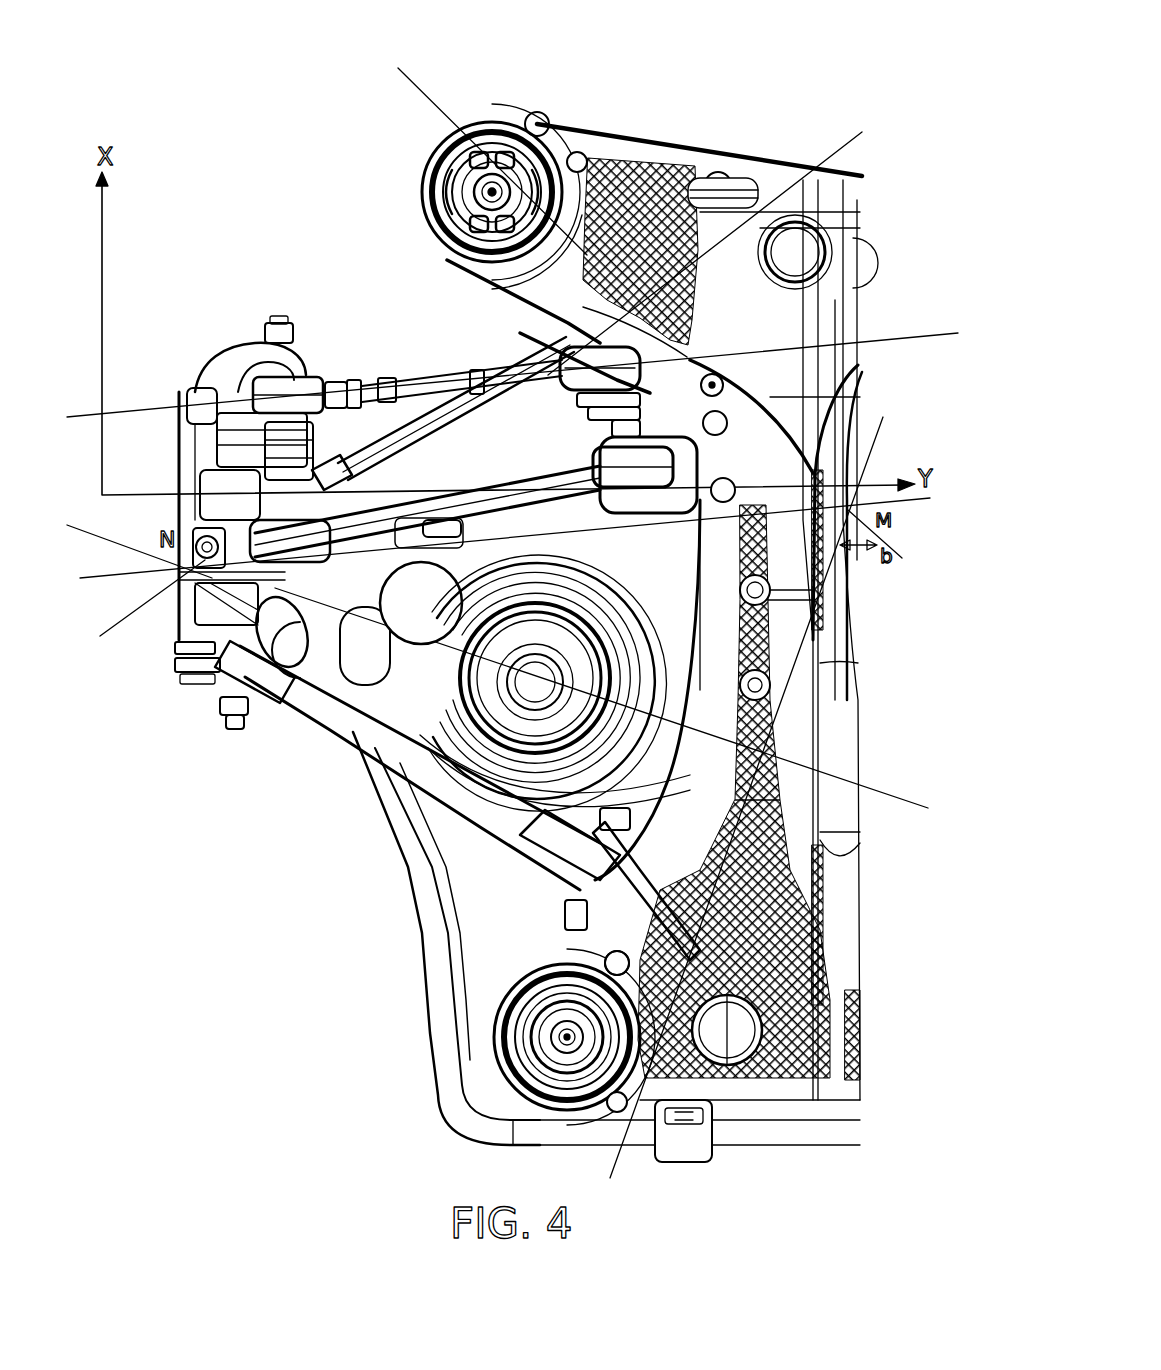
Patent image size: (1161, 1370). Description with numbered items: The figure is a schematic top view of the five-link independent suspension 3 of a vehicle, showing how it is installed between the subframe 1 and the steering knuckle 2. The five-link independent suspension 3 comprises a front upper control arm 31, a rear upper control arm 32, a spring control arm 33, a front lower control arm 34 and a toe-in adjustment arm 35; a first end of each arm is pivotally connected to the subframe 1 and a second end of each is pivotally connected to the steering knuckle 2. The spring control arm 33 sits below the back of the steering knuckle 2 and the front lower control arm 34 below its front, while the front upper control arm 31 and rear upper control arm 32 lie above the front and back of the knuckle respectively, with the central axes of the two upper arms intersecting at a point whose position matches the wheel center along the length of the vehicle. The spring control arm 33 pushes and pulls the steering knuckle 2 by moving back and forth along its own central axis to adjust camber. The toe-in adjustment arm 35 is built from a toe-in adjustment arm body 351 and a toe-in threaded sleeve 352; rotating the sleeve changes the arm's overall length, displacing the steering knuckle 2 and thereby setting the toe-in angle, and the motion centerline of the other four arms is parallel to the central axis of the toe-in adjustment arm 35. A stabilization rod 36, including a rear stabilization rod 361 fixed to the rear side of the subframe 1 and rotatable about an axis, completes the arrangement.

The subframe 1 is at (658, 160).
The steering knuckle 2 is at (238, 358).
The five-link independent suspension 3 is at (500, 487).
The front upper control arm 31 is at (445, 492).
The rear upper control arm 32 is at (353, 730).
The spring control arm 33 is at (602, 620).
The front lower control arm 34 is at (508, 353).
The toe-in adjustment arm 35 is at (432, 370).
The toe-in adjustment arm body 351 is at (347, 390).
The toe-in threaded sleeve 352 is at (395, 377).
The stabilization rod 36 is at (445, 1063).
The rear stabilization rod 361 is at (438, 1020).